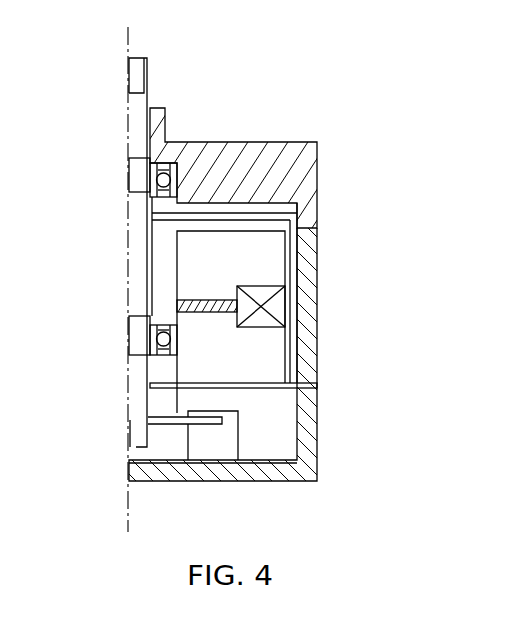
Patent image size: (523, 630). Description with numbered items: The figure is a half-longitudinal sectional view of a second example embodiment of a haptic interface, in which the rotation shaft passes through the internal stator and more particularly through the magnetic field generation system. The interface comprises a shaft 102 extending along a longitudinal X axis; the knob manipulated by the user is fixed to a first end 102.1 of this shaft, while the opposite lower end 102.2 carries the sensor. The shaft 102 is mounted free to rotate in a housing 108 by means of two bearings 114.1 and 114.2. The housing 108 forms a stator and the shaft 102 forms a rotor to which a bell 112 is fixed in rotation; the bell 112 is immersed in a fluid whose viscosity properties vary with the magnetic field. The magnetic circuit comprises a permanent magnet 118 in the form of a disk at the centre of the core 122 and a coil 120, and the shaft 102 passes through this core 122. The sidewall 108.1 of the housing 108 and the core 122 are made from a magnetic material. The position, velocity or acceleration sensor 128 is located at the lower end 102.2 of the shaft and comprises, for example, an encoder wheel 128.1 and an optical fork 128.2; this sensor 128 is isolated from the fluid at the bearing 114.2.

The longitudinal axis X is at (125, 42).
The shaft 102 is at (159, 256).
The first end 102.1 is at (143, 75).
The lower end of the shaft 102.2 is at (135, 430).
The housing 108 is at (320, 287).
The sidewall 108.1 is at (302, 370).
The bell 112 is at (270, 204).
The bearing 114.1 is at (176, 174).
The bearing 114.2 is at (167, 343).
The permanent magnet 118 is at (203, 300).
The coil 120 is at (280, 311).
The core 122 is at (273, 261).
The position, velocity or acceleration sensor 128 is at (256, 470).
The encoder wheel 128.1 is at (178, 423).
The optical fork 128.2 is at (216, 452).